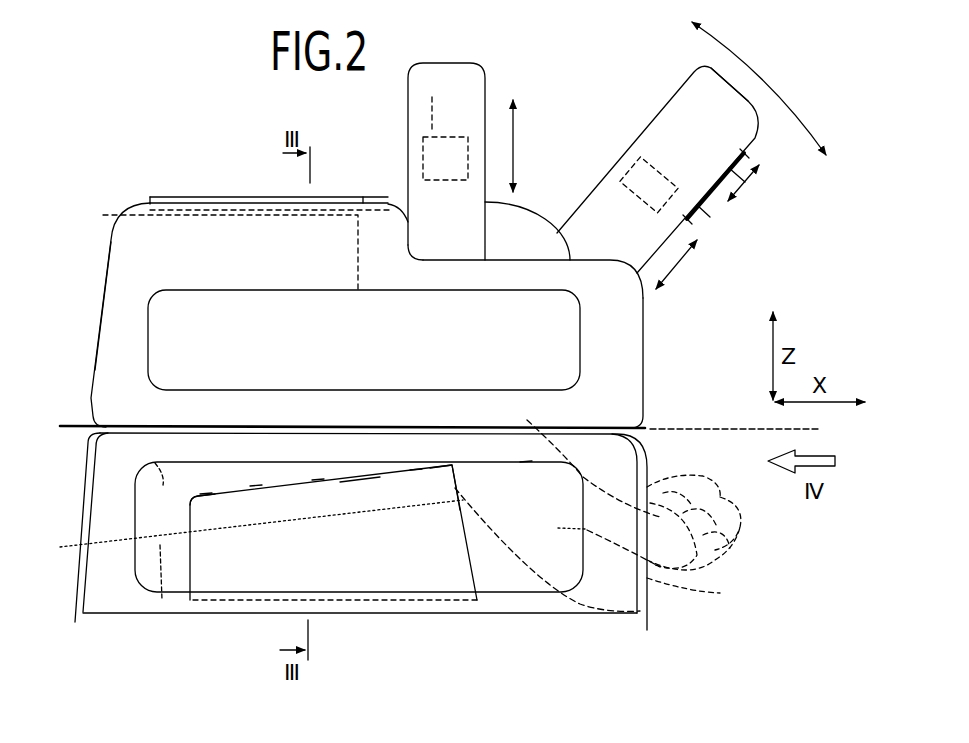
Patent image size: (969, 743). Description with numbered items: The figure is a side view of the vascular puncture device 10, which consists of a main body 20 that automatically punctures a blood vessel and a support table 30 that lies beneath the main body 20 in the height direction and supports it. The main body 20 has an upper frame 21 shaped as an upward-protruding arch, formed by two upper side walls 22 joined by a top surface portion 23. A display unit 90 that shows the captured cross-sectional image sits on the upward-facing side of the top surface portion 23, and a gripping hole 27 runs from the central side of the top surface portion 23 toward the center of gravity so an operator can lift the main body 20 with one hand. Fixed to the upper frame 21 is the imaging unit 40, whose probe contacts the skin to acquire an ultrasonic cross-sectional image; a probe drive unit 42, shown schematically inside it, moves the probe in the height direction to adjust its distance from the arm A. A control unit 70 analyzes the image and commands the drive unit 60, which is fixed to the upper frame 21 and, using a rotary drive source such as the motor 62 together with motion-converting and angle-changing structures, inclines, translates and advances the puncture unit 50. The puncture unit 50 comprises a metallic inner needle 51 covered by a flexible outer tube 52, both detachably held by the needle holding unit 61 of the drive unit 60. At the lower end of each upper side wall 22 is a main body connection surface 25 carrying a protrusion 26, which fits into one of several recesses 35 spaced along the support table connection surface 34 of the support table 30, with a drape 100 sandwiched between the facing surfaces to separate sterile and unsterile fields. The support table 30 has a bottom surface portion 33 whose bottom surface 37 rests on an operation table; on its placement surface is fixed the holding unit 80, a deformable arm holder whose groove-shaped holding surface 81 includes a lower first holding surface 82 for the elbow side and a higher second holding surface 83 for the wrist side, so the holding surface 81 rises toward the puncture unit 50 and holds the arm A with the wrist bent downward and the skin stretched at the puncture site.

The vascular puncture device 10 is at (164, 56).
The main body 20 is at (648, 346).
The upper frame 21 is at (147, 204).
The upper side wall 22 is at (133, 337).
The top surface portion 23 is at (188, 200).
The main body connection surface 25 is at (163, 485).
The protrusion 26 is at (261, 533).
The gripping hole 27 is at (130, 217).
The support table 30 is at (647, 613).
The bottom surface portion 33 is at (358, 615).
The support table connection surface 34 is at (255, 486).
The recess 35 is at (206, 494).
The bottom surface 37 is at (76, 622).
The imaging unit 40 is at (487, 135).
The probe drive unit 42 is at (434, 84).
The puncture unit 50 is at (720, 205).
The inner needle 51 is at (733, 170).
The outer tube 52 is at (693, 222).
The drive unit 60 is at (648, 140).
The needle holding unit 61 is at (673, 145).
The motor 62 is at (630, 170).
The control unit 70 is at (362, 203).
The holding unit 80 is at (403, 574).
The holding surface 81 is at (360, 480).
The first holding surface 82 is at (203, 495).
The second holding surface 83 is at (452, 465).
The display unit 90 is at (243, 197).
The drape 100 is at (733, 437).
The arm A is at (161, 520).